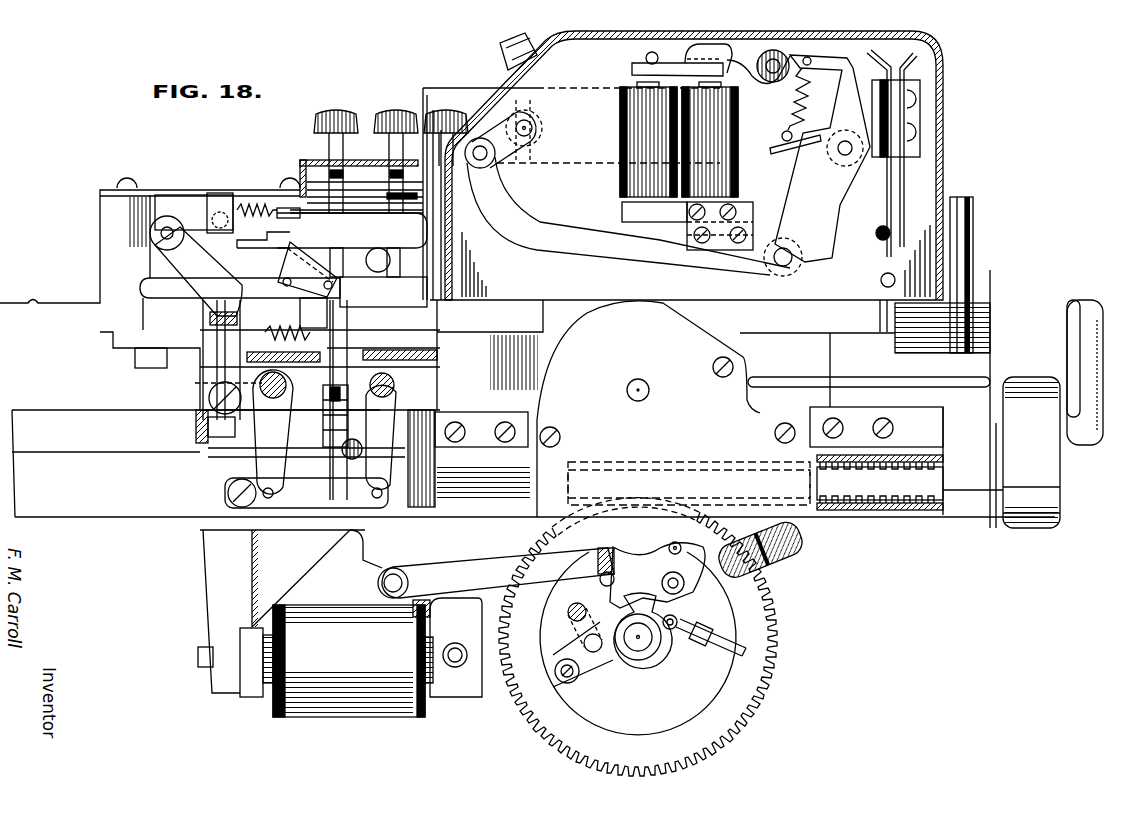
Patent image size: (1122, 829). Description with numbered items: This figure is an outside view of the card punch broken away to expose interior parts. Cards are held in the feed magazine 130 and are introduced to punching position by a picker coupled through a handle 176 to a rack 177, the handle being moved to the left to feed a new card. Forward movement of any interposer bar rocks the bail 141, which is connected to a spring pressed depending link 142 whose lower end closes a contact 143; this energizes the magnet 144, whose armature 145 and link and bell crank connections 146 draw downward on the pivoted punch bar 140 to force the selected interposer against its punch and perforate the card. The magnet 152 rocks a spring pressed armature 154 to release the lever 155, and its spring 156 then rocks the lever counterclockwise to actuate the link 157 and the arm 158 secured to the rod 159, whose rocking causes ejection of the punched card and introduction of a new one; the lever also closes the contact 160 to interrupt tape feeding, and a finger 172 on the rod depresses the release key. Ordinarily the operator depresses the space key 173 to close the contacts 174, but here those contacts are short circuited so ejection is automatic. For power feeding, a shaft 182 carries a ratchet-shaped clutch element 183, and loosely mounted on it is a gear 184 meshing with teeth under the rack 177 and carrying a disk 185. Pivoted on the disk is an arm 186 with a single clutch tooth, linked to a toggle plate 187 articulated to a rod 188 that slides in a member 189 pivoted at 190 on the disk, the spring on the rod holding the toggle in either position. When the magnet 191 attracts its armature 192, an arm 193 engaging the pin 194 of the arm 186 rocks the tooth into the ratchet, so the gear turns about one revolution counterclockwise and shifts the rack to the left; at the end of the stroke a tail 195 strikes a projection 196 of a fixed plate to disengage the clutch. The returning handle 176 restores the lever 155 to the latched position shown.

The feed magazine 130 is at (983, 300).
The punch bar 140 is at (173, 210).
The bail 141 is at (285, 254).
The spring pressed depending link 142 is at (340, 337).
The contact 143 is at (332, 408).
The magnet 144 is at (425, 461).
The armature 145 is at (410, 395).
The link and bell crank connections 146 is at (212, 445).
The magnet 152 is at (722, 133).
The spring pressed armature 154 is at (735, 45).
The lever 155 is at (832, 200).
The spring 156 is at (800, 148).
The link 157 is at (545, 226).
The arm 158 is at (513, 150).
The rod 159 is at (533, 128).
The contact 160 is at (883, 262).
The finger 172 is at (500, 52).
The space key 173 is at (331, 118).
The contacts 174 is at (327, 190).
The handle 176 is at (1085, 353).
The rack 177 is at (908, 482).
The shaft 182 is at (638, 650).
The ratchet-shaped clutch element 183 is at (630, 608).
The gear 184 is at (750, 733).
The disk 185 is at (760, 693).
The arm 186 is at (568, 612).
The toggle plate 187 is at (597, 674).
The rod 188 is at (705, 590).
The member 189 is at (715, 637).
The pivot 190 is at (694, 641).
The magnet 191 is at (350, 615).
The armature 192 is at (468, 680).
The arm 193 is at (480, 565).
The pin 194 is at (608, 570).
The tail 195 is at (676, 548).
The projection 196 is at (792, 545).